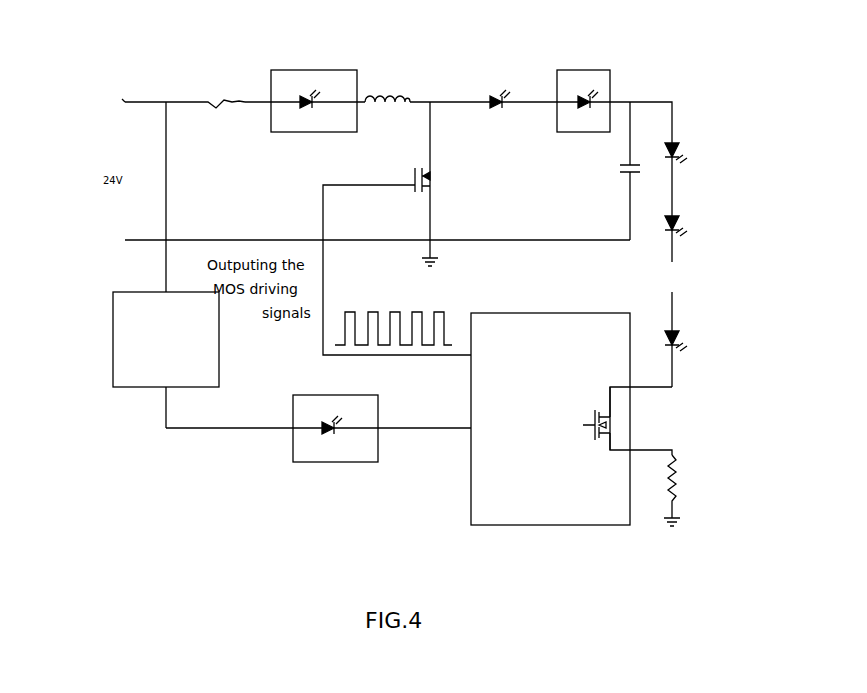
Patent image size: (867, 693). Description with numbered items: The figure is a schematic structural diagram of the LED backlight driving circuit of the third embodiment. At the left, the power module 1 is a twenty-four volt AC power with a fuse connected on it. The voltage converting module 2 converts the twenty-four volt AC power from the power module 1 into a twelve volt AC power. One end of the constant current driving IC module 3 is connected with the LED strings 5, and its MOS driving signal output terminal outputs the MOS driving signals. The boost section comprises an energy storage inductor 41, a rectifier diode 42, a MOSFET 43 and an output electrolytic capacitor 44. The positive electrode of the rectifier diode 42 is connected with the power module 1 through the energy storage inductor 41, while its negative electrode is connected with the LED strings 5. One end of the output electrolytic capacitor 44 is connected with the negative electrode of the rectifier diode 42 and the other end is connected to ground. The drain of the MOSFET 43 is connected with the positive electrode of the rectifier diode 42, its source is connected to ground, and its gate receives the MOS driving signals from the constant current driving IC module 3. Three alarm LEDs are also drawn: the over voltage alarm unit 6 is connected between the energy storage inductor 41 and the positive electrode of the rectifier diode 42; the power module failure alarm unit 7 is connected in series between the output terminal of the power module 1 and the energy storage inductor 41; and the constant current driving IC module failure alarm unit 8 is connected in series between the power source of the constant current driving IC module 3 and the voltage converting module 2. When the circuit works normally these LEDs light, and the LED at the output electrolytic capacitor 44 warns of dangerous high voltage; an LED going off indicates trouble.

The power module 1 is at (125, 102).
The voltage converting module 2 is at (113, 315).
The constant current driving IC module 3 is at (573, 313).
The LED strings 5 is at (672, 290).
The over voltage alarm unit 6 is at (588, 70).
The power module failure alarm unit 7 is at (325, 70).
The constant current driving IC module failure alarm unit 8 is at (295, 415).
The energy storage inductor 41 is at (395, 105).
The rectifier diode 42 is at (501, 105).
The MOSFET 43 is at (412, 178).
The output electrolytic capacitor 44 is at (620, 168).